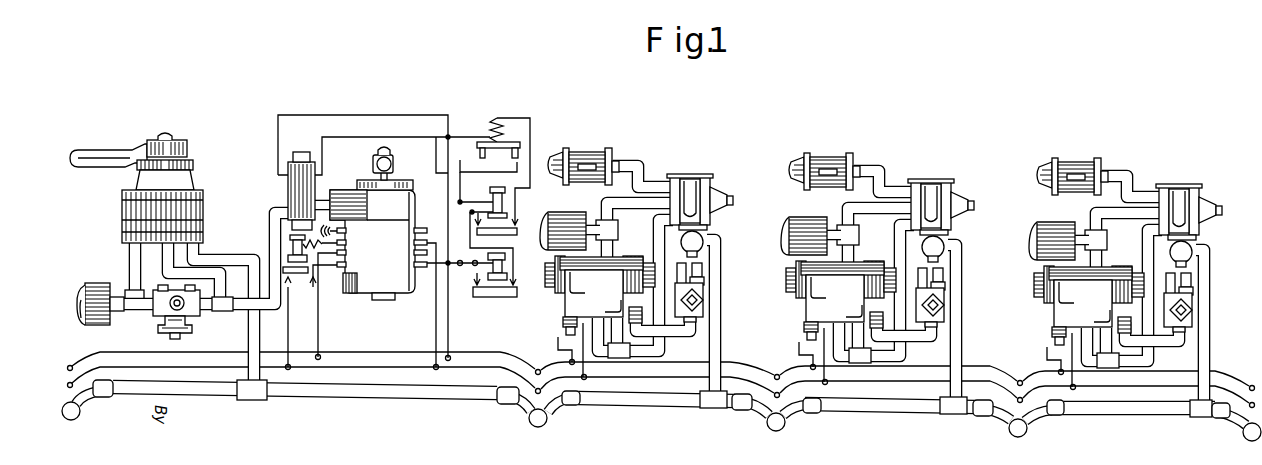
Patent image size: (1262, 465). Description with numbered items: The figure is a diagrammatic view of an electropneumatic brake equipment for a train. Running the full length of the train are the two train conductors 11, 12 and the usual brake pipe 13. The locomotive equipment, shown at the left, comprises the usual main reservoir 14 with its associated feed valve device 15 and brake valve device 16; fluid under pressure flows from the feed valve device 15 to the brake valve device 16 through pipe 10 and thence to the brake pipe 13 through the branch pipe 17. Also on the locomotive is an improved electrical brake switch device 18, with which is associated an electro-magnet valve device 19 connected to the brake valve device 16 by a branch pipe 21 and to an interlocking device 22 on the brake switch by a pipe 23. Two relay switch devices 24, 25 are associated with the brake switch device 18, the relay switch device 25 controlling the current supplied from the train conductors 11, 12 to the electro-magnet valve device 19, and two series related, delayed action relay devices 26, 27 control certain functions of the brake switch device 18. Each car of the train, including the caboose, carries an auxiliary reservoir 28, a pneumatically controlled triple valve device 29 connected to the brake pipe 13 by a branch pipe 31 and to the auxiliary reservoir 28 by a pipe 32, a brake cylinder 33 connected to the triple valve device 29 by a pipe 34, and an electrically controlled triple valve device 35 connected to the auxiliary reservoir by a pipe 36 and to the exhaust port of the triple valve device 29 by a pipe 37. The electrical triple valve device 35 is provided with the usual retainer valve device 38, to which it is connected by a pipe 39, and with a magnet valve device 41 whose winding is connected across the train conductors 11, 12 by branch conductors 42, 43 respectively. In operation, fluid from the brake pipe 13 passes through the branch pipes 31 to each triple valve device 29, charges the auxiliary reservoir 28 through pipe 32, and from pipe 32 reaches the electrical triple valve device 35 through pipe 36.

The pipe 10 is at (166, 252).
The train conductor 11 is at (340, 361).
The train conductor 12 is at (370, 367).
The brake pipe 13 is at (474, 395).
The main reservoir 14 is at (95, 290).
The feed valve device 15 is at (199, 314).
The brake valve device 16 is at (103, 226).
The branch pipe 17 is at (256, 331).
The electrical brake switch device 18 is at (406, 214).
The electro-magnet valve device 19 is at (287, 189).
The branch pipe 21 is at (270, 239).
The interlocking device 22 is at (338, 200).
The pipe 23 is at (387, 207).
The relay switch device 24 is at (313, 315).
The relay switch device 25 is at (523, 109).
The delayed action relay device 26 is at (543, 214).
The delayed action relay device 27 is at (510, 320).
The auxiliary reservoir 28 is at (570, 211).
The triple valve device 29 is at (689, 183).
The branch pipe 31 is at (719, 297).
The pipe 32 is at (638, 208).
The brake cylinder 33 is at (583, 152).
The pipe 34 is at (657, 186).
The electrically controlled triple valve device 35 is at (577, 299).
The pipe 36 is at (608, 263).
The pipe 37 is at (658, 351).
The retainer valve device 38 is at (703, 285).
The pipe 39 is at (705, 332).
The magnet valve device 41 is at (564, 322).
The branch conductor 42 is at (570, 352).
The branch conductor 43 is at (578, 325).